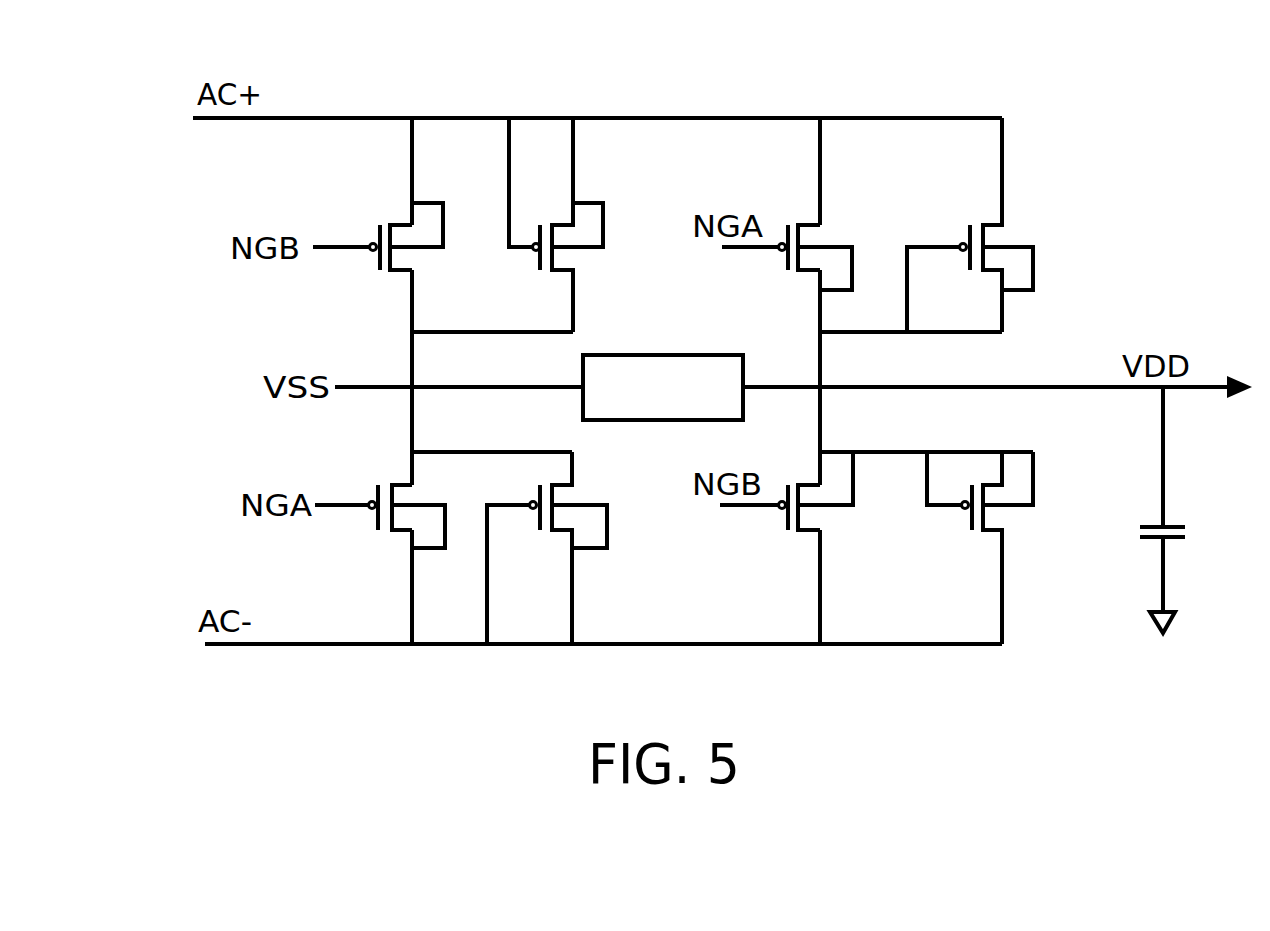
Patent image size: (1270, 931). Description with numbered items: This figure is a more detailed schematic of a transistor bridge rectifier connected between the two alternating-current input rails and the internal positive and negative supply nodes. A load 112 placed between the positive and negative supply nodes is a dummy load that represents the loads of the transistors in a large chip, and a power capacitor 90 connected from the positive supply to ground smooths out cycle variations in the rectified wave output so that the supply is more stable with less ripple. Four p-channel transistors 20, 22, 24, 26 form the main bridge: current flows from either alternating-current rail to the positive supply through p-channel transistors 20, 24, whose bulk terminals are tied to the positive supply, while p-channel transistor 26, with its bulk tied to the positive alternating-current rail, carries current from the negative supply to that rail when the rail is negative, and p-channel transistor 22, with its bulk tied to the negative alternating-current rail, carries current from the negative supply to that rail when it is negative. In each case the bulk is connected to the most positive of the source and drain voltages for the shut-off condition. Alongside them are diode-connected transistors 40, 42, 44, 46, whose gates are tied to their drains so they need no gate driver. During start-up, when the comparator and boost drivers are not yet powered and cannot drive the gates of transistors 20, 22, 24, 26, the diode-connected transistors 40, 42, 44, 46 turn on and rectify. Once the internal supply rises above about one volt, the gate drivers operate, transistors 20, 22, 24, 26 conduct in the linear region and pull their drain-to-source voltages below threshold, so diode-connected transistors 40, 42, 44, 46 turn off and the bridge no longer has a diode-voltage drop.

The p-channel transistor 20 is at (786, 271).
The p-channel transistor 22 is at (378, 529).
The p-channel transistor 24 is at (785, 529).
The p-channel transistor 26 is at (378, 271).
The diode-connected transistor 40 is at (968, 271).
The diode-connected transistor 42 is at (538, 529).
The diode-connected transistor 44 is at (968, 529).
The diode-connected transistor 46 is at (538, 271).
The power capacitor 90 is at (1183, 537).
The load 112 is at (692, 403).